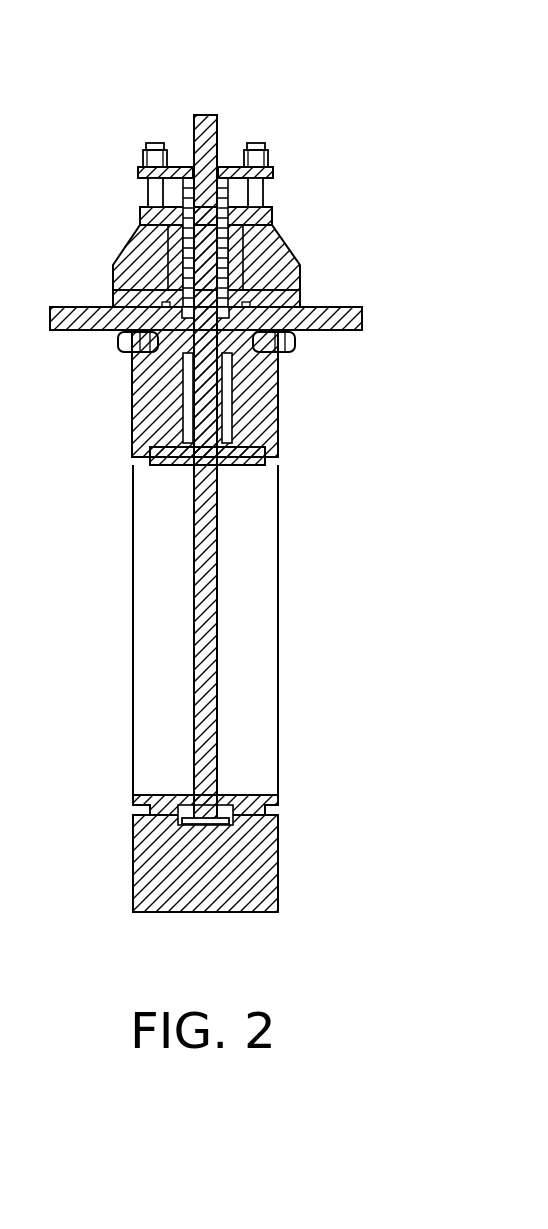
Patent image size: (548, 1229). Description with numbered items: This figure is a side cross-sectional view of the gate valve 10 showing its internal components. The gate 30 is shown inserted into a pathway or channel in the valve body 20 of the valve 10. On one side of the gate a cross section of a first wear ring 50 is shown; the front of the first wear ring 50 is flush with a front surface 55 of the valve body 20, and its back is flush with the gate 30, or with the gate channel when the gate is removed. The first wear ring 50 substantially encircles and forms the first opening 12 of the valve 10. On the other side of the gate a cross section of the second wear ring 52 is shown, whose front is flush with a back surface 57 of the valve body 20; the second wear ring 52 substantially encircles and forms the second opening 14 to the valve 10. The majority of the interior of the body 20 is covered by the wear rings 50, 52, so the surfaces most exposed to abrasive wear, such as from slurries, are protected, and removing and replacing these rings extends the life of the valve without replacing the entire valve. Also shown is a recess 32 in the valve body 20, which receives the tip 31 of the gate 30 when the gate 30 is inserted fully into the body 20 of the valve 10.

The valve 10 is at (358, 205).
The first opening 12 is at (278, 677).
The second opening 14 is at (133, 613).
The valve body 20 is at (362, 318).
The gate 30 is at (212, 115).
The tip 31 is at (207, 824).
The recess 32 is at (220, 826).
The first wear ring 50 is at (278, 462).
The second wear ring 52 is at (132, 460).
The front surface 55 is at (278, 440).
The back surface 57 is at (132, 405).